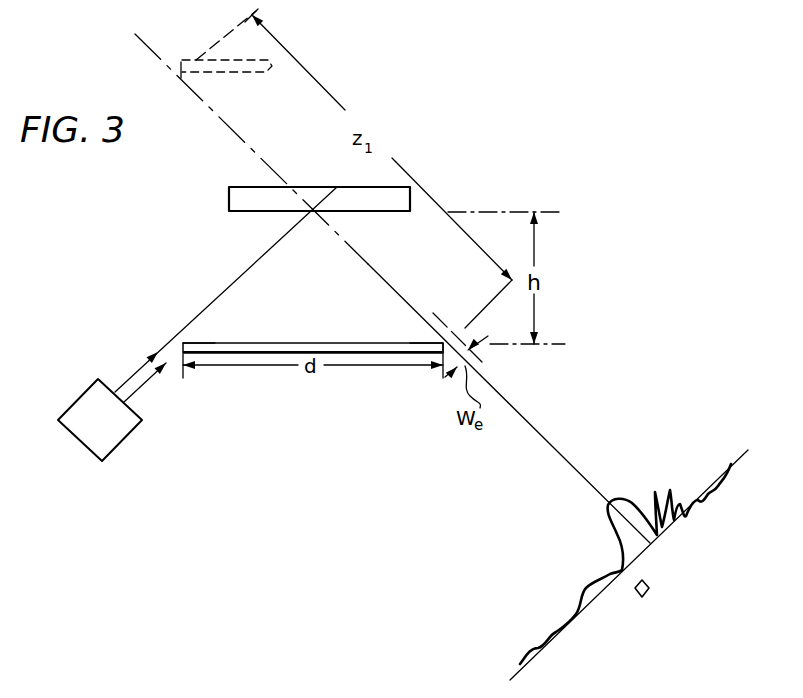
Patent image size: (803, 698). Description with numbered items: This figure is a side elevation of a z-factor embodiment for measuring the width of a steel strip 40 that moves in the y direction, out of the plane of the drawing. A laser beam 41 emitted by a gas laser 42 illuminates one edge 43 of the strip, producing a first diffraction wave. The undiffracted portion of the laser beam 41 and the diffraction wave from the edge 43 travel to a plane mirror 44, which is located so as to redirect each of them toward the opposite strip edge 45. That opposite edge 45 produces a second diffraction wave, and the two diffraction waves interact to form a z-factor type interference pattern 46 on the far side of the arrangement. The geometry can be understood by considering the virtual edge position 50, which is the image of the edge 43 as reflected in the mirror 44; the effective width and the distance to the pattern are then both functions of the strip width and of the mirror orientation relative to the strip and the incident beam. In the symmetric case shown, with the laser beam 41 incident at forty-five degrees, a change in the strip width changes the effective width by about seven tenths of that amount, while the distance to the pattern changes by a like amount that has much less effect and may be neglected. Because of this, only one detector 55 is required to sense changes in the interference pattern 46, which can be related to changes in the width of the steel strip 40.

The steel strip 40 is at (298, 343).
The laser beam 41 is at (160, 388).
The gas laser 42 is at (130, 432).
The edge of the strip 43 is at (186, 343).
The plane mirror 44 is at (229, 197).
The opposite strip edge 45 is at (442, 343).
The interference pattern 46 is at (672, 478).
The virtual edge position 50 is at (180, 66).
The detector 55 is at (648, 583).